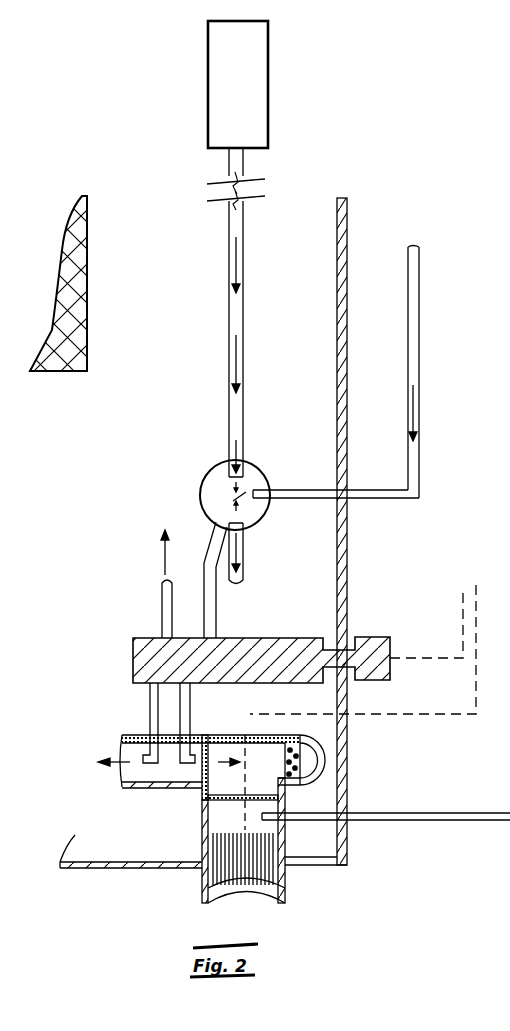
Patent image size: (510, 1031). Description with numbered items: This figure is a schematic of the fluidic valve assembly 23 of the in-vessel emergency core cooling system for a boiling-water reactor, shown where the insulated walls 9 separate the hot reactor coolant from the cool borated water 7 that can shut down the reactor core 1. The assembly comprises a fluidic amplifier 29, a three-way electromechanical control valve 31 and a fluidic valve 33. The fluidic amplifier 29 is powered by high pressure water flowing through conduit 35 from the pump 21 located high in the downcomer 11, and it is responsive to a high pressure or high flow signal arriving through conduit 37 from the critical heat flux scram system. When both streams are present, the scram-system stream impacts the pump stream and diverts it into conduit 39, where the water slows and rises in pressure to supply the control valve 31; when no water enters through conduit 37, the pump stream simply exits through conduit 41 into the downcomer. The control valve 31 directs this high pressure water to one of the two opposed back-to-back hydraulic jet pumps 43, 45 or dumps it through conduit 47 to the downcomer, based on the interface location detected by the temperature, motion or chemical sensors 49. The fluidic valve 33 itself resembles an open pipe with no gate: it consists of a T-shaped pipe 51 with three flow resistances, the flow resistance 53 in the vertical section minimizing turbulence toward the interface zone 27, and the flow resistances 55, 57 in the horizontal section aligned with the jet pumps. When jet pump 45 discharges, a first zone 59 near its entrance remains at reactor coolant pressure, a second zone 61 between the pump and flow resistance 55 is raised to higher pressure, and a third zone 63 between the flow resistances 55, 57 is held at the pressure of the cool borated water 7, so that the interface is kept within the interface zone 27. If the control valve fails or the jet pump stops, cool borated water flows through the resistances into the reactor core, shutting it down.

The reactor core 1 is at (75, 300).
The cool borated water 7 is at (464, 313).
The insulated walls 9 is at (348, 597).
The downcomer 11 is at (160, 258).
The pump 21 is at (248, 80).
The fluidic valve assembly 23 is at (120, 630).
The interface zone 27 is at (285, 868).
The fluidic amplifier 29 is at (200, 485).
The three-way electromechanical control valve 31 is at (132, 650).
The fluidic valve 33 is at (112, 798).
The conduit 35 is at (228, 399).
The conduit 37 is at (292, 490).
The conduit 39 is at (214, 531).
The conduit 41 is at (247, 550).
The hydraulic jet pump 43 is at (125, 750).
The hydraulic jet pump 45 is at (198, 737).
The conduit 47 is at (160, 598).
The sensors 49 is at (205, 868).
The T-shaped pipe 51 is at (175, 787).
The flow resistance 53 is at (210, 800).
The flow resistance 55 is at (215, 778).
The flow resistance 57 is at (300, 757).
The first zone 59 is at (165, 770).
The second zone 61 is at (205, 748).
The third zone 63 is at (290, 797).